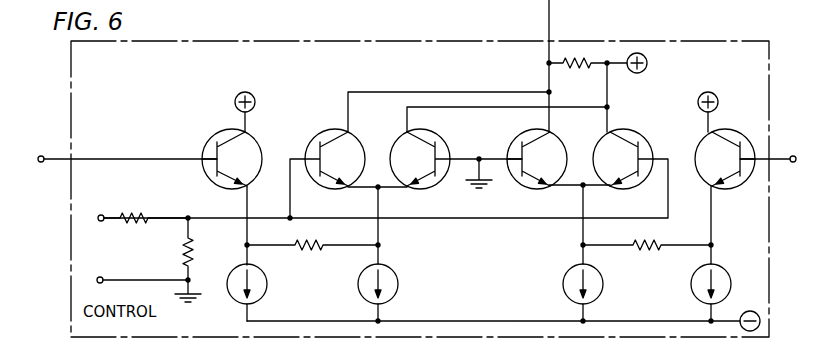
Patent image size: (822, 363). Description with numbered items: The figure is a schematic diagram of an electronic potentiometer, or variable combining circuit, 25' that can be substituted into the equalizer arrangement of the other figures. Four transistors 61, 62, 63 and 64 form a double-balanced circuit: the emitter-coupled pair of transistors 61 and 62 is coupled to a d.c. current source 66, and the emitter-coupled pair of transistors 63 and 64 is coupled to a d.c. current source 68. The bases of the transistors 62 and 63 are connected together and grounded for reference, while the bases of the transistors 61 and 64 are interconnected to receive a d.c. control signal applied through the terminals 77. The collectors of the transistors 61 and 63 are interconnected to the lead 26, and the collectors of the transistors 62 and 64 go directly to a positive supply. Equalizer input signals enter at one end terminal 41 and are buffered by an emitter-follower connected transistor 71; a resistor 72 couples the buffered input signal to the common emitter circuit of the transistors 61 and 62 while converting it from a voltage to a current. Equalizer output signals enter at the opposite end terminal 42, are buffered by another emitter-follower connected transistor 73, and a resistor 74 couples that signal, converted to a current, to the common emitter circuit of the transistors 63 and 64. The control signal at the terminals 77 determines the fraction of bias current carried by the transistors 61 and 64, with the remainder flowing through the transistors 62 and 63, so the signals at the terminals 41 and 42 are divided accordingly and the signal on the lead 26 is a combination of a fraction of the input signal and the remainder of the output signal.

The variable combining circuit 25' is at (420, 171).
The lead 26 is at (548, 22).
The end terminal 41 is at (42, 163).
The opposite end terminal 42 is at (793, 163).
The transistor 61 is at (315, 135).
The transistor 62 is at (399, 138).
The transistor 63 is at (514, 140).
The transistor 64 is at (637, 136).
The d.c. current source 66 is at (399, 288).
The d.c. current source 68 is at (562, 283).
The emitter-follower connected transistor 71 is at (212, 136).
The resistor 72 is at (312, 252).
The emitter-follower connected transistor 73 is at (737, 189).
The resistor 74 is at (647, 252).
The terminals 77 is at (97, 318).